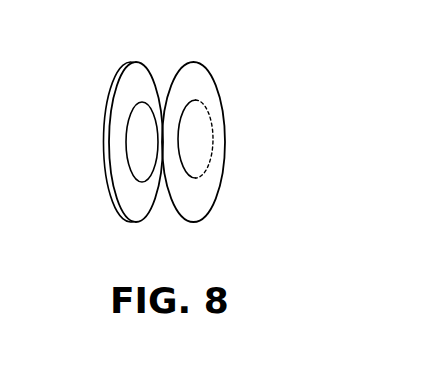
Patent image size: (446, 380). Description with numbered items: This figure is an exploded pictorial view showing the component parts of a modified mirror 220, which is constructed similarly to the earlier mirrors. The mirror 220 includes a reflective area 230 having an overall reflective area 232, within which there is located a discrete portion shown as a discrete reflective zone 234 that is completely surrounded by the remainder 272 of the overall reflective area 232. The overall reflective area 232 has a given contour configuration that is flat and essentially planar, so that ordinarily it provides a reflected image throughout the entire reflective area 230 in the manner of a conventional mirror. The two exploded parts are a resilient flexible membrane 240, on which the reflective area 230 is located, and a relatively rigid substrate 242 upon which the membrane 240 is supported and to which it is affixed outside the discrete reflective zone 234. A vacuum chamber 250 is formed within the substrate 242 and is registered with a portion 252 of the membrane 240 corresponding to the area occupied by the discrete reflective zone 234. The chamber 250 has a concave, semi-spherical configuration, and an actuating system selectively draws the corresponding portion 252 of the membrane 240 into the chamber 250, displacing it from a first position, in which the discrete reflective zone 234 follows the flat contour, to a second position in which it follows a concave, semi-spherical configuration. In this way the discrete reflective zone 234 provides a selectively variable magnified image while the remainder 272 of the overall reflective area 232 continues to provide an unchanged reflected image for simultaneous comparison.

The mirror 220 is at (170, 67).
The resilient flexible membrane 240 is at (221, 100).
The substrate 242 is at (116, 202).
The vacuum chamber 250 is at (144, 134).
The portion of the membrane 252 is at (181, 113).
The overall reflective area 232 is at (217, 157).
The discrete reflective zone 234 is at (197, 142).
The reflective area 230 is at (201, 208).
The remainder of the overall reflective area 272 is at (197, 210).